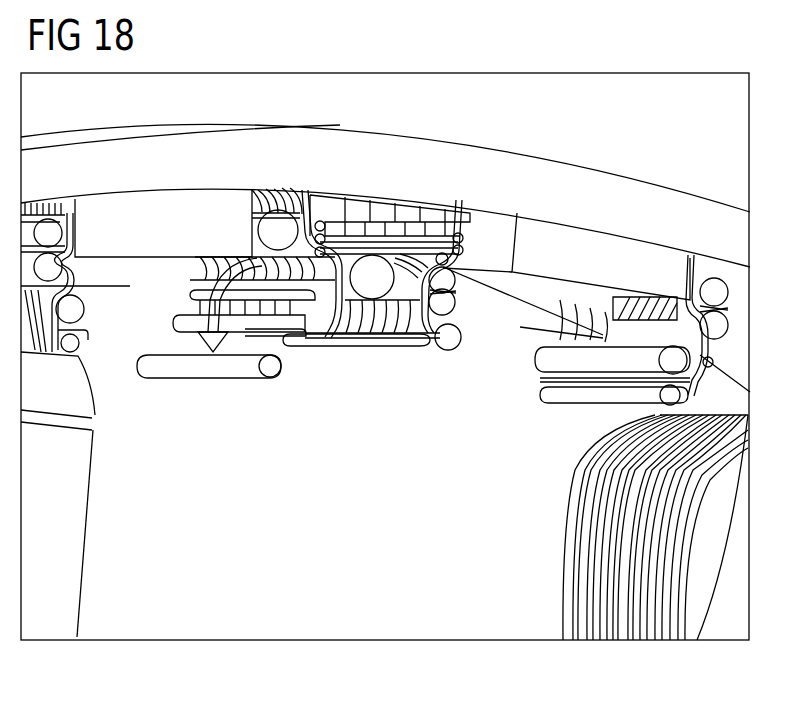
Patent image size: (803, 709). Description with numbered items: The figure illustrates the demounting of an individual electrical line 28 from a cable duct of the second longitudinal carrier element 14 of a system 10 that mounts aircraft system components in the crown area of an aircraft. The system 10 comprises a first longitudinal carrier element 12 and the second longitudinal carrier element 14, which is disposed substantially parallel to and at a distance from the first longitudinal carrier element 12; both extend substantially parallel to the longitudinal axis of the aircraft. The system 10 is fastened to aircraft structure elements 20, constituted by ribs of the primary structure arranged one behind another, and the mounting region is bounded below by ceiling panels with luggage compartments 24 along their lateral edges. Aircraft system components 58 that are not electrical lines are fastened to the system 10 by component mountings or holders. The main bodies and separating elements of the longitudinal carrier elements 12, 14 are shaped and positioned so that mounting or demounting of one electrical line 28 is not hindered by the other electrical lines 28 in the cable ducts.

The system 10 is at (180, 186).
The first longitudinal carrier element 12 is at (62, 352).
The second longitudinal carrier element 14 is at (425, 335).
The aircraft structure element 20 is at (510, 170).
The luggage compartment 24 is at (680, 550).
The electrical line 28 is at (192, 368).
The aircraft system component 58 is at (117, 218).